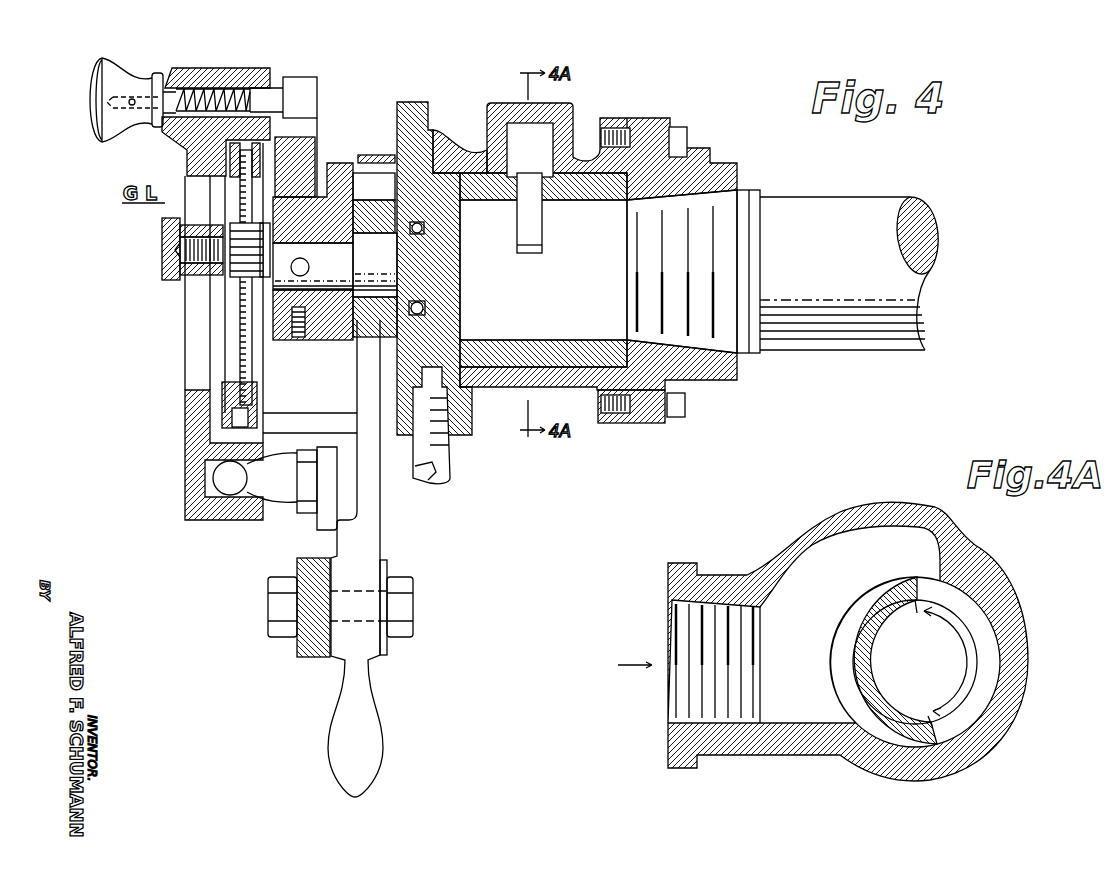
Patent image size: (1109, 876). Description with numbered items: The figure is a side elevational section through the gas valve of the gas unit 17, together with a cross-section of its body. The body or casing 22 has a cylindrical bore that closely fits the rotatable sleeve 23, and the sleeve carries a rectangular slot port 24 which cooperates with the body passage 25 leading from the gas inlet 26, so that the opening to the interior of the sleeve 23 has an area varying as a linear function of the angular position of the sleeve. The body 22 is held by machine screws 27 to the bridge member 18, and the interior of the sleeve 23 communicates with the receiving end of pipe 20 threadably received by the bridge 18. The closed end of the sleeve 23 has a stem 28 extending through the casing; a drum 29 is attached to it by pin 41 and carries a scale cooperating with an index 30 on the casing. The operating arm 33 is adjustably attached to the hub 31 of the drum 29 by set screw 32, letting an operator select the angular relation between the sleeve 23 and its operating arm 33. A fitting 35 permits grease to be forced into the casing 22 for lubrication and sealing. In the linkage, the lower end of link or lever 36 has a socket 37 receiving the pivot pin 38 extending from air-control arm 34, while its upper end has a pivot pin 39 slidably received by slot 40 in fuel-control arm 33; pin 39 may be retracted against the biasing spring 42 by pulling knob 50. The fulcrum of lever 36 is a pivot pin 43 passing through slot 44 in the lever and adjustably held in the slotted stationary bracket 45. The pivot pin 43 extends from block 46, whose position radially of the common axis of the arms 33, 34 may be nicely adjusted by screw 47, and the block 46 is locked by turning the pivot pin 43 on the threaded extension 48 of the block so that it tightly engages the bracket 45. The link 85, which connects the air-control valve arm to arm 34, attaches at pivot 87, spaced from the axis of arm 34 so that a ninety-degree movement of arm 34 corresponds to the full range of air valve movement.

In FIG. 4, the gas unit 17 is at (497, 423).
In FIG. 4, the bridge member 18 is at (690, 172).
In FIG. 4, the pipe 20 is at (840, 347).
In FIG. 4, the body or casing 22 is at (585, 148).
In FIG. 4A, the body or casing 22 is at (868, 760).
In FIG. 4, the rotatable sleeve 23 is at (601, 202).
In FIG. 4A, the rotatable sleeve 23 is at (912, 755).
In FIG. 4, the slot port 24 is at (531, 213).
In FIG. 4A, the slot port 24 is at (943, 663).
In FIG. 4, the body passage 25 is at (540, 173).
In FIG. 4A, the body passage 25 is at (890, 545).
In FIG. 4A, the gas inlet 26 is at (678, 710).
In FIG. 4, the machine screws 27 is at (683, 127).
In FIG. 4, the stem 28 is at (395, 277).
In FIG. 4, the drum 29 is at (331, 163).
In FIG. 4, the index 30 is at (360, 153).
In FIG. 4, the hub 31 is at (282, 318).
In FIG. 4, the set screw 32 is at (302, 338).
In FIG. 4, the operating arm 33 is at (313, 150).
In FIG. 4, the air-control arm 34 is at (381, 520).
In FIG. 4, the fitting 35 is at (440, 475).
In FIG. 4, the link or lever 36 is at (196, 407).
In FIG. 4, the socket 37 is at (251, 498).
In FIG. 4, the pivot pin 38 is at (286, 502).
In FIG. 4, the pivot pin 39 is at (318, 103).
In FIG. 4, the slot 40 is at (318, 80).
In FIG. 4, the pin 41 is at (309, 268).
In FIG. 4, the biasing spring 42 is at (198, 125).
In FIG. 4, the pivot pin 43 is at (172, 280).
In FIG. 4, the slot 44 is at (204, 373).
In FIG. 4, the slotted stationary bracket 45 is at (328, 418).
In FIG. 4, the block 46 is at (233, 280).
In FIG. 4, the screw 47 is at (240, 325).
In FIG. 4, the threaded extension 48 is at (185, 282).
In FIG. 4, the knob 50 is at (88, 107).
In FIG. 4, the link 85 is at (310, 658).
In FIG. 4, the pivot 87 is at (268, 603).